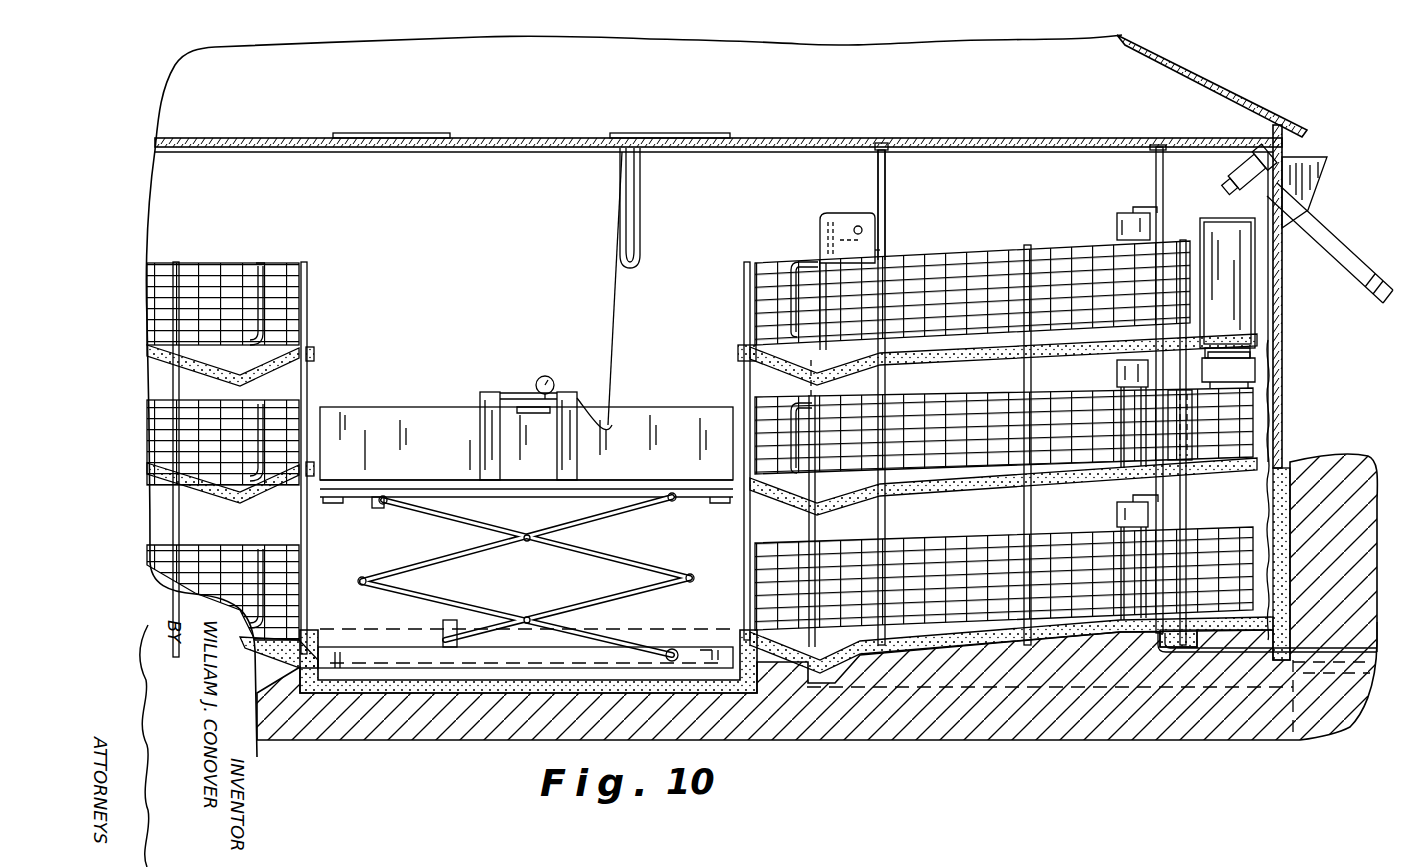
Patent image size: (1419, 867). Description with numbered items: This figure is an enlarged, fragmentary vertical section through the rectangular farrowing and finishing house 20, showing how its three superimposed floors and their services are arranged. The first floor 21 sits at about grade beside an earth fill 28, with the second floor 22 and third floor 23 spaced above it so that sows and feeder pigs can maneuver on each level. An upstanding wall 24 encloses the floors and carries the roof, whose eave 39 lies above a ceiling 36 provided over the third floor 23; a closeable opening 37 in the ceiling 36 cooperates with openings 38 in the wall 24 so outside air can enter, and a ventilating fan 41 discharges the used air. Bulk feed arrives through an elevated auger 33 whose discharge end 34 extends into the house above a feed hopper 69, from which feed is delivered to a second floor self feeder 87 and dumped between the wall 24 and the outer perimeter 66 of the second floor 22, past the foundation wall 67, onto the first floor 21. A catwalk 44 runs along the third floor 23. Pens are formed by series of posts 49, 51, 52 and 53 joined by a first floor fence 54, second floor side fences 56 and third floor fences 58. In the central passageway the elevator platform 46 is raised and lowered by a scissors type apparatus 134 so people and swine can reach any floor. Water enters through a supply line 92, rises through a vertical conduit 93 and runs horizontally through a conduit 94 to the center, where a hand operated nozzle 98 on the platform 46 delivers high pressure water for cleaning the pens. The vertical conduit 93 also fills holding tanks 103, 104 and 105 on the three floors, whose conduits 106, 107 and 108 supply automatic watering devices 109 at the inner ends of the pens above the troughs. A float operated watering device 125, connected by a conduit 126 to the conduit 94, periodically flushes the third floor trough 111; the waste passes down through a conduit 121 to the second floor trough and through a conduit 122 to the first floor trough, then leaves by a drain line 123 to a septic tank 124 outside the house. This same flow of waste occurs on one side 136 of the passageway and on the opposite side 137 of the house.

The farrowing and finishing house 20 is at (1300, 70).
The first floor 21 is at (940, 645).
The second floor 22 is at (160, 472).
The third floor 23 is at (158, 356).
The wall 24 is at (1284, 328).
The earth fill 28 is at (1335, 475).
The auger 33 is at (1350, 242).
The discharge end 34 is at (1228, 182).
The ceiling 36 is at (1138, 138).
The closeable opening 37 is at (530, 138).
The wall openings 38 is at (1268, 128).
The eave 39 is at (1310, 125).
The ventilating fan 41 is at (1322, 165).
The catwalk 44 is at (1245, 378).
The elevator platform 46 is at (414, 406).
The post 49 is at (746, 546).
The post 51 is at (172, 523).
The post 52 is at (1026, 497).
The post 53 is at (1186, 512).
The fence 54 is at (254, 548).
The side fence 56 is at (245, 406).
The fence 58 is at (222, 264).
The outer perimeter of second floor 66 is at (1270, 458).
The foundation wall 67 is at (1290, 468).
The feed hopper 69 is at (1262, 292).
The self feeder 87 is at (1195, 422).
The supply line 92 is at (1377, 622).
The vertical conduit 93 is at (1155, 170).
The horizontal conduit 94 is at (805, 152).
The hand operated nozzle 98 is at (612, 336).
The holding tank 103 is at (1120, 223).
The holding tank 104 is at (1120, 373).
The holding tank 105 is at (1118, 512).
The conduit 106 is at (265, 287).
The conduit 107 is at (985, 400).
The conduit 108 is at (970, 542).
The automatic watering device 109 is at (300, 322).
The third floor trough 111 is at (748, 366).
The conduit 121 is at (812, 390).
The conduit 122 is at (814, 528).
The drain line 123 is at (1020, 690).
The septic tank 124 is at (1318, 737).
The float-operated watering device 125 is at (816, 224).
The conduit 126 is at (886, 181).
The scissors type apparatus 134 is at (682, 557).
The one side of the passageway 136 is at (345, 330).
The opposite side of the house 137 is at (740, 310).